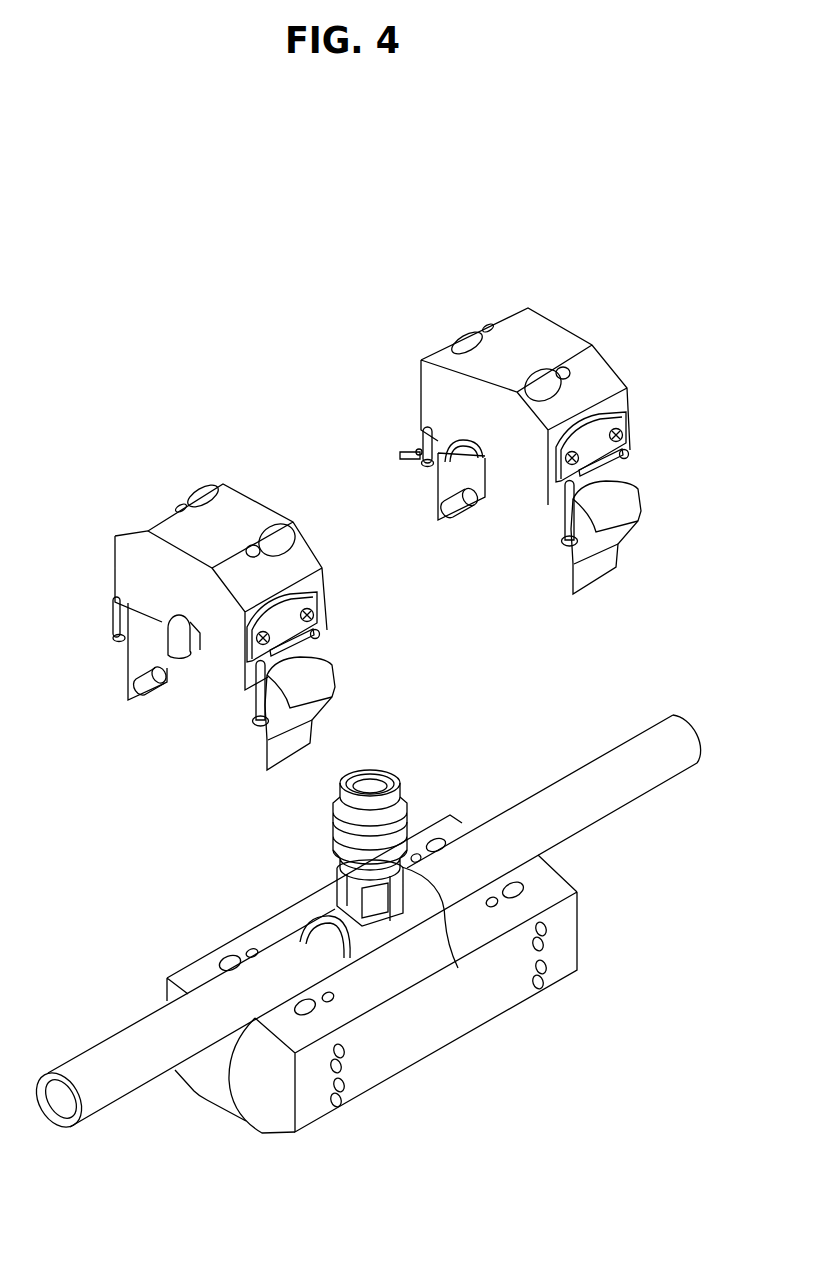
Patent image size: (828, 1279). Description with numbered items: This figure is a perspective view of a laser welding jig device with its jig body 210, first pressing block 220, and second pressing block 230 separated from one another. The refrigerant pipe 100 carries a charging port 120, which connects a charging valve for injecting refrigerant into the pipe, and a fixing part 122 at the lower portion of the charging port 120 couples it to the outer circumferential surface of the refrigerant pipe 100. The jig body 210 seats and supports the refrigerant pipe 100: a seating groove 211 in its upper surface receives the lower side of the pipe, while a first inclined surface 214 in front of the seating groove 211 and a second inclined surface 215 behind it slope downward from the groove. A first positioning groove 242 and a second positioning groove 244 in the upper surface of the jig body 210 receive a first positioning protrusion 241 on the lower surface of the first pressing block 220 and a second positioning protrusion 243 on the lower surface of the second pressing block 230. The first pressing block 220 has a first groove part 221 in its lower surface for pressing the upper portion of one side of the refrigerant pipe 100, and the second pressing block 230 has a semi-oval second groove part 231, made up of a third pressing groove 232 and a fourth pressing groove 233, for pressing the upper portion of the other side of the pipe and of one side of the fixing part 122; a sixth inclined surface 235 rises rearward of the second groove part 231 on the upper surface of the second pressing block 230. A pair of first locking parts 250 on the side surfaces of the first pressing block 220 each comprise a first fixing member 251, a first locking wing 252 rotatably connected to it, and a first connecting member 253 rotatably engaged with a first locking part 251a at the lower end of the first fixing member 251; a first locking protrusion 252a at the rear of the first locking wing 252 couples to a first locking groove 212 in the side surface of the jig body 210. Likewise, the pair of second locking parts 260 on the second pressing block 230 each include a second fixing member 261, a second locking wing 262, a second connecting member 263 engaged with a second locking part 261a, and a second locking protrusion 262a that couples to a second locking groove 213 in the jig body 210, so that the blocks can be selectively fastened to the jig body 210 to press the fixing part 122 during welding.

The refrigerant pipe 100 is at (668, 770).
The charging port 120 is at (405, 752).
The fixing part 122 is at (458, 968).
The jig body 210 is at (385, 1003).
The seating groove 211 is at (245, 1135).
The first locking groove 212 is at (345, 1055).
The second locking groove 213 is at (547, 928).
The first inclined surface 214 is at (386, 990).
The second inclined surface 215 is at (248, 938).
The first pressing block 220 is at (163, 474).
The first groove part 221 is at (186, 668).
The second pressing block 230 is at (458, 298).
The second groove part 231 is at (336, 388).
The third pressing groove 232 is at (400, 455).
The fourth pressing groove 233 is at (410, 446).
The sixth inclined surface 235 is at (424, 440).
The first positioning protrusion 241 is at (115, 634).
The first positioning groove 242 is at (224, 960).
The second positioning protrusion 243 is at (436, 470).
The second positioning groove 244 is at (437, 832).
The first locking parts 250 is at (206, 708).
The first fixing member 251 is at (249, 660).
The first locking part 251a is at (318, 637).
The first locking wing 252 is at (268, 770).
The first locking protrusion 252a is at (128, 700).
The first connecting member 253 is at (253, 722).
The second locking parts 260 is at (518, 529).
The second fixing member 261 is at (556, 483).
The second locking part 261a is at (628, 458).
The second locking wing 262 is at (574, 595).
The second locking protrusion 262a is at (462, 505).
The second connecting member 263 is at (562, 542).